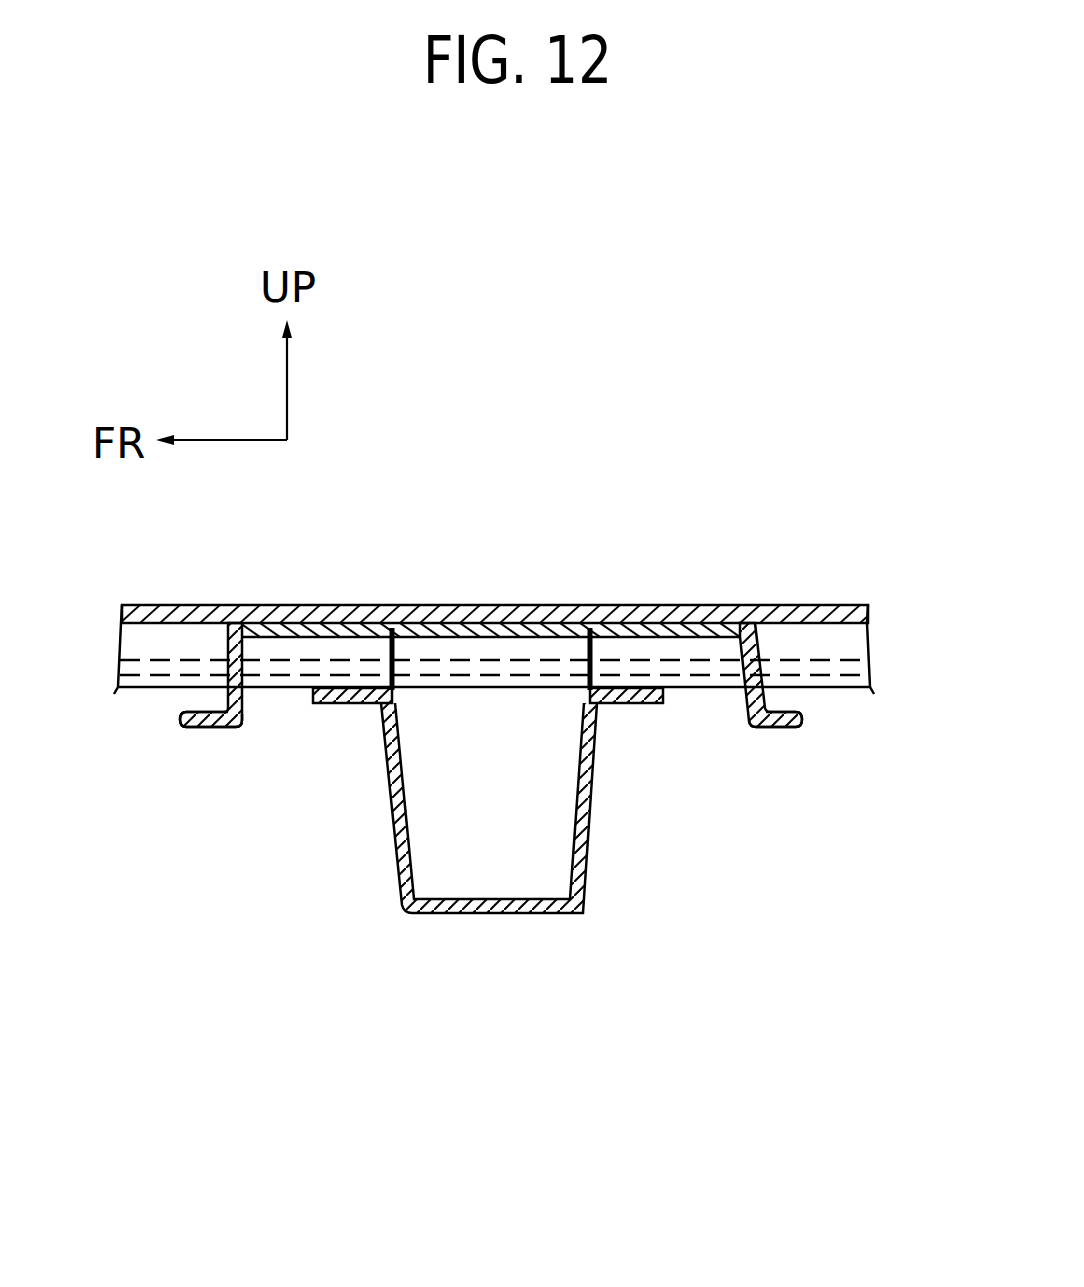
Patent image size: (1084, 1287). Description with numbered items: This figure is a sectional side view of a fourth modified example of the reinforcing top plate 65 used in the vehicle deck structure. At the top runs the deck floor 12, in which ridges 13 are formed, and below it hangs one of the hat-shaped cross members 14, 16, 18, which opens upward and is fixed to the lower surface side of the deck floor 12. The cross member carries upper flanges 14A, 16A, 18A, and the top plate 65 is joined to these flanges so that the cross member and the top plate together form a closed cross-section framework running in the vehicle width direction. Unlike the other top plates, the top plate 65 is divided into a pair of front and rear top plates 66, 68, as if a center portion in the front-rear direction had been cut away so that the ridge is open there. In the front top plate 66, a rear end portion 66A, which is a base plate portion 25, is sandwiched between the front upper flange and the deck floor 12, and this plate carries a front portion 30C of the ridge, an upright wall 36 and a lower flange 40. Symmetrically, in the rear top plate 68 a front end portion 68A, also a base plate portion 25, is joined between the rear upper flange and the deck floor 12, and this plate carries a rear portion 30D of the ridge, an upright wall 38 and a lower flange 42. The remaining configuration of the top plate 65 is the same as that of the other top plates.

The deck floor 12 is at (847, 600).
The ridges 13 is at (812, 643).
The cross member 14 is at (509, 757).
The cross member 16 is at (509, 757).
The cross member 18 is at (509, 757).
The upper flange 14A is at (445, 862).
The upper flange 16A is at (445, 862).
The upper flange 18A is at (627, 703).
The base plate portion 25 is at (302, 690).
The front portion of ridge 30C is at (258, 622).
The rear portion of ridge 30D is at (735, 630).
The upright wall 36 is at (430, 659).
The upright wall 38 is at (792, 673).
The lower flange 40 is at (200, 728).
The lower flange 42 is at (783, 728).
The top plate 65 is at (488, 555).
The front top plate 66 is at (413, 633).
The rear top plate 68 is at (607, 597).
The rear end portion 66A is at (388, 657).
The front end portion 68A is at (590, 655).